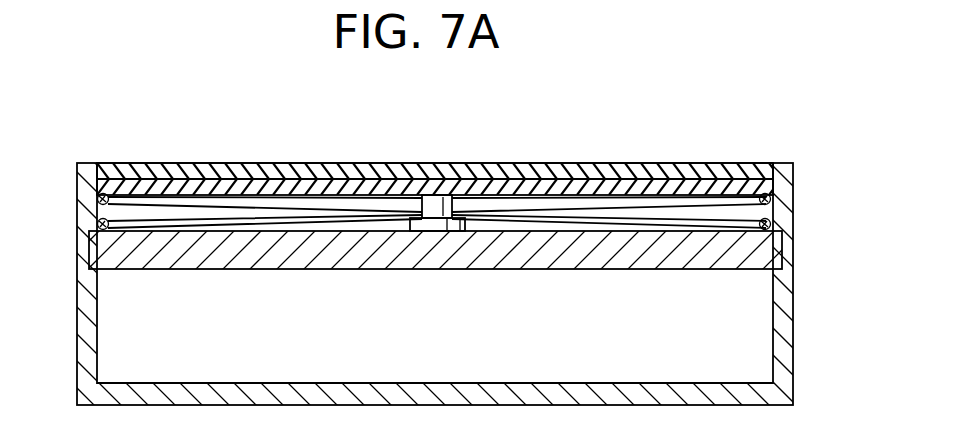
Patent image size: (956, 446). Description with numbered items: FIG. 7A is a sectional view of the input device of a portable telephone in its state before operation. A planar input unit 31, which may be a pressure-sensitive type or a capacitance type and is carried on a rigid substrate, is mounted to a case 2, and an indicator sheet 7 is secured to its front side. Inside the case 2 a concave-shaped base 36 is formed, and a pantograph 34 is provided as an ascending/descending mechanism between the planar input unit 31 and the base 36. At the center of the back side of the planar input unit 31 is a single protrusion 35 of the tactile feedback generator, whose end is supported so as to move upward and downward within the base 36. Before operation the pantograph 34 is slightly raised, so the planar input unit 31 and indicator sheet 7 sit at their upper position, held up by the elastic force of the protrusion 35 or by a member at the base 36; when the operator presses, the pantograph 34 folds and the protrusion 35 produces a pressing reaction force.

The case 2 is at (785, 328).
The indicator sheet 7 is at (727, 167).
The planar input unit 31 is at (770, 188).
The pantograph 34 is at (645, 217).
The protrusion 35 is at (445, 223).
The base 36 is at (753, 242).